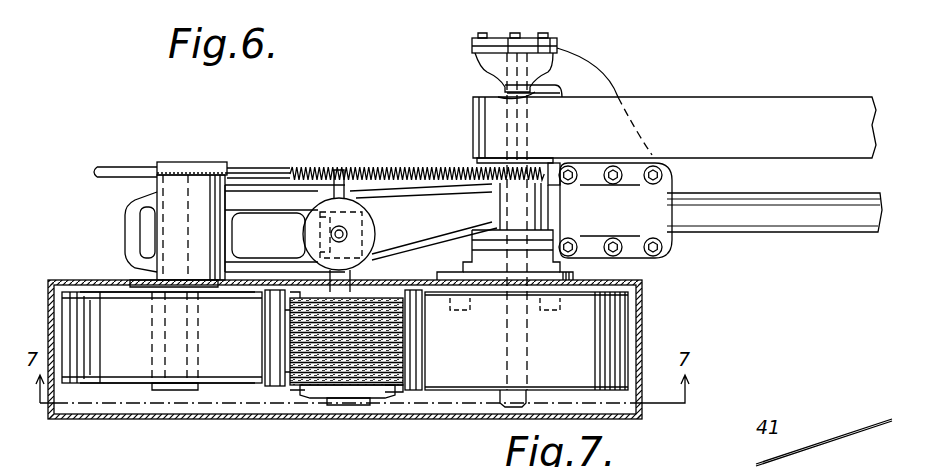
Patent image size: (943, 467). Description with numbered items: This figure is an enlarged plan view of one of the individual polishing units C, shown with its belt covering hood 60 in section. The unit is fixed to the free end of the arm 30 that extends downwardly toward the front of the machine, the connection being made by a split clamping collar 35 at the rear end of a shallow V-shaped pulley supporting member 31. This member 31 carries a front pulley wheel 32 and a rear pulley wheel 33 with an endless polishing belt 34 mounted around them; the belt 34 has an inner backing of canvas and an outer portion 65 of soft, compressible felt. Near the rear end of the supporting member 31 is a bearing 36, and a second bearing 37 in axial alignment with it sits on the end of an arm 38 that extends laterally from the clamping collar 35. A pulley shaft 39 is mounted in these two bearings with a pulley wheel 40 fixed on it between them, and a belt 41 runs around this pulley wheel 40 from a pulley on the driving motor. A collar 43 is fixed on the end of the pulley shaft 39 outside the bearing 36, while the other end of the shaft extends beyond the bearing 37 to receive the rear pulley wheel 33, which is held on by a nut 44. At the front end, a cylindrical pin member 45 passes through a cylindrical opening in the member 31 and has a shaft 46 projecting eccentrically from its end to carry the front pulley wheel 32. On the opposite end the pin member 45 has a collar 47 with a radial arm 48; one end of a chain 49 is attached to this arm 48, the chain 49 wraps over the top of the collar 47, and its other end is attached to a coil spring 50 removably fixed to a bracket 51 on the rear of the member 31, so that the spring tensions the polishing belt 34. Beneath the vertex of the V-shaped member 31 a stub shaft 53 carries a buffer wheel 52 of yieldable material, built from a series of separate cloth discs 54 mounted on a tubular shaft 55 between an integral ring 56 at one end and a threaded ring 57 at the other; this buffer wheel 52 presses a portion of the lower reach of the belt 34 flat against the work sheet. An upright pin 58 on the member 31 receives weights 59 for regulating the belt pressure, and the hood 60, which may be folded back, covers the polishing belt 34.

The polishing unit C is at (659, 316).
The arm 30 is at (706, 234).
The pulley supporting member 31 is at (262, 203).
The pulley wheel 32 is at (275, 388).
The pulley wheel 33 is at (418, 392).
The polishing belt 34 is at (130, 386).
The split clamping collar 35 is at (615, 210).
The bearing 36 is at (480, 212).
The bearing 37 is at (490, 70).
The arm 38 is at (598, 84).
The pulley shaft 39 is at (500, 98).
The pulley wheel 40 is at (505, 88).
The belt 41 is at (708, 98).
The collar 43 is at (488, 294).
The nut 44 is at (506, 409).
The pin member 45 is at (200, 343).
The shaft 46 is at (162, 300).
The collar 47 is at (226, 163).
The radial arm 48 is at (98, 178).
The chain 49 is at (244, 165).
The coil spring 50 is at (360, 166).
The bracket 51 is at (552, 194).
The buffer wheel 52 is at (296, 388).
The stub shaft 53 is at (347, 404).
The cloth discs 54 is at (398, 370).
The tubular shaft 55 is at (372, 398).
The ring 56 is at (377, 280).
The ring 57 is at (340, 406).
The upright pin 58 is at (330, 236).
The weights 59 is at (376, 236).
The hood 60 is at (66, 420).
The outer portion 65 is at (100, 292).